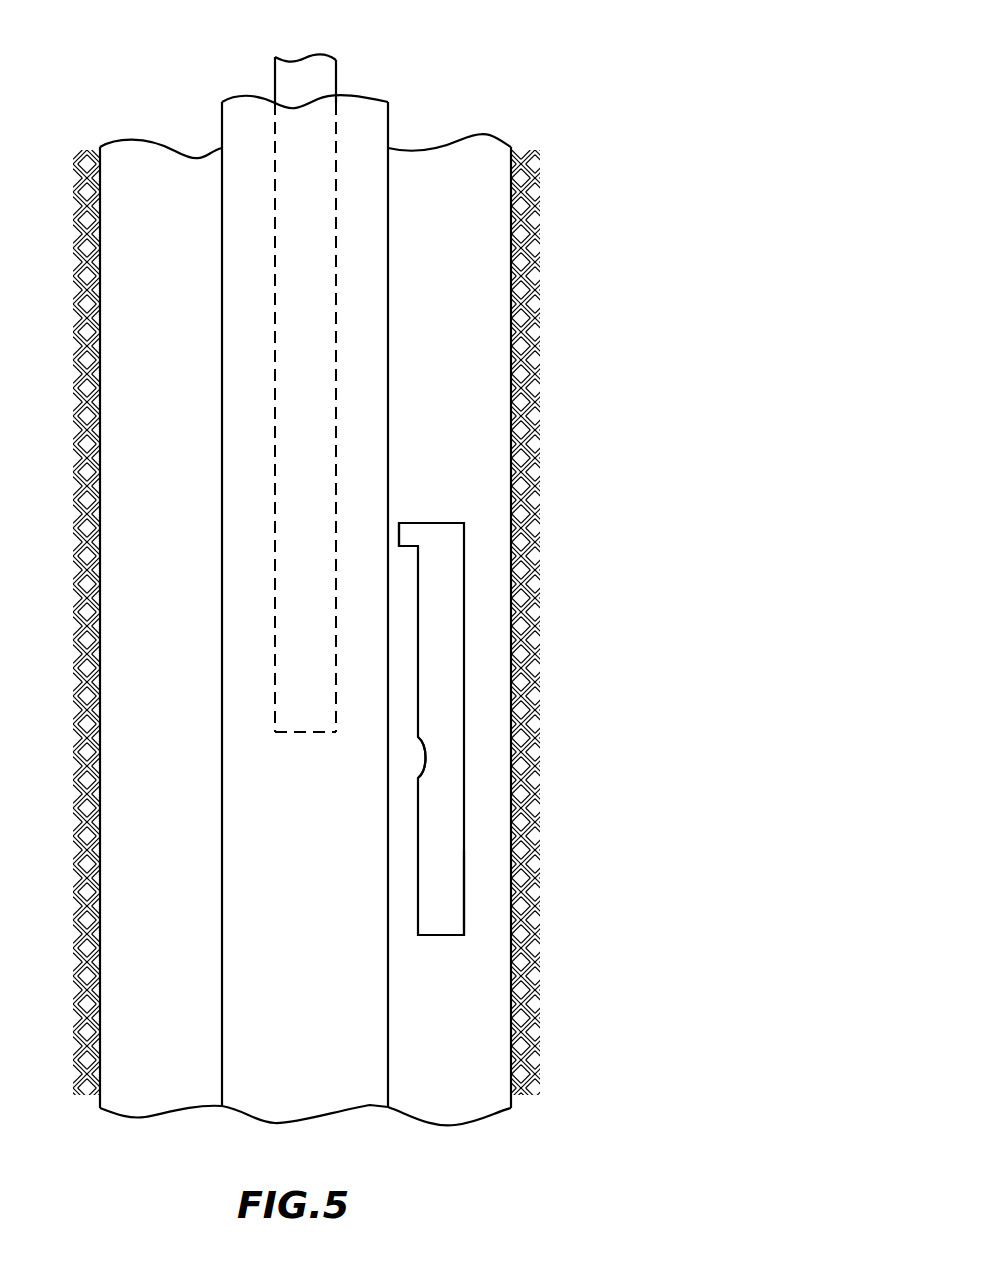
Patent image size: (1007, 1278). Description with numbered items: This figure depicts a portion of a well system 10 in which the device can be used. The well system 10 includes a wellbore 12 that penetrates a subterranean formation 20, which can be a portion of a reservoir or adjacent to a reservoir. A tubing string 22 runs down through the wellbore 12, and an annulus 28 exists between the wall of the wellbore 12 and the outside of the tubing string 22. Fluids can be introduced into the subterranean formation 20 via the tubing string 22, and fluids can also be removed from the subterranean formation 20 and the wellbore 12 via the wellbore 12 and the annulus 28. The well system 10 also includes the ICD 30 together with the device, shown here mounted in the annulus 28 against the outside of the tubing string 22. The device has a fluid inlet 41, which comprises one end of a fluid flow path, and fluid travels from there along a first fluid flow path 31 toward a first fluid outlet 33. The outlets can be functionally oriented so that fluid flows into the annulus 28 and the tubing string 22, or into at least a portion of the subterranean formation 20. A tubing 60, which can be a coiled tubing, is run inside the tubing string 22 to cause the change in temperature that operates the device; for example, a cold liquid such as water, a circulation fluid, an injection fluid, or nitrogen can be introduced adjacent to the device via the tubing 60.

The well system 10 is at (581, 102).
The wellbore 12 is at (511, 236).
The subterranean formation 20 is at (636, 381).
The tubing string 22 is at (388, 122).
The annulus 28 is at (463, 361).
The ICD 30 is at (464, 617).
The first fluid flow path 31 is at (463, 850).
The first fluid outlet 33 is at (399, 526).
The fluid inlet 41 is at (424, 757).
The tubing 60 is at (275, 302).